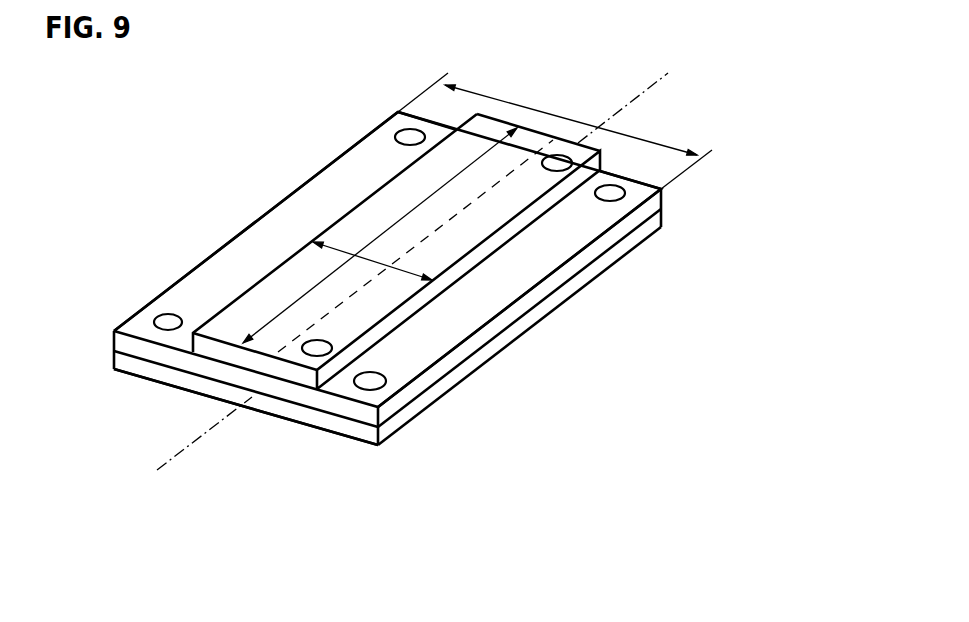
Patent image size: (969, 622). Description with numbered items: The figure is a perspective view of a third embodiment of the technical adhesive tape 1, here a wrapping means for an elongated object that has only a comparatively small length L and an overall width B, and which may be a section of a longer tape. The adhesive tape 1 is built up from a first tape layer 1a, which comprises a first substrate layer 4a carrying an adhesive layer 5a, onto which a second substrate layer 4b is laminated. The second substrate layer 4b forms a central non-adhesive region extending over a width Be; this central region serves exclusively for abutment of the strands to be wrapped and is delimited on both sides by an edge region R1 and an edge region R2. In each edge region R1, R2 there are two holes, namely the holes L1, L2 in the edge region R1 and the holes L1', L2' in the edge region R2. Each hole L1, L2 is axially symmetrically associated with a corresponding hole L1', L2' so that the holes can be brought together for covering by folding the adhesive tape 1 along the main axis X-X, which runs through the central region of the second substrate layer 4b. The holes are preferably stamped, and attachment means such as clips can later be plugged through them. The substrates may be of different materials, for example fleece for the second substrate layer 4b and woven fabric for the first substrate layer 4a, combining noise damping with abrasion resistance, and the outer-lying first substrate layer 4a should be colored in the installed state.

The adhesive tape 1 is at (193, 365).
The first tape layer 1a is at (147, 351).
The first substrate layer 4a is at (248, 401).
The second substrate layer 4b is at (533, 133).
The adhesive layer 5a is at (663, 193).
The edge region R1 is at (363, 157).
The edge region R2 is at (553, 228).
The hole L1 is at (138, 289).
The hole L2 is at (385, 102).
The hole L1' is at (441, 416).
The hole L2' is at (653, 146).
The width B is at (489, 93).
The width Be is at (338, 245).
The length L is at (310, 290).
The main axis X is at (637, 96).